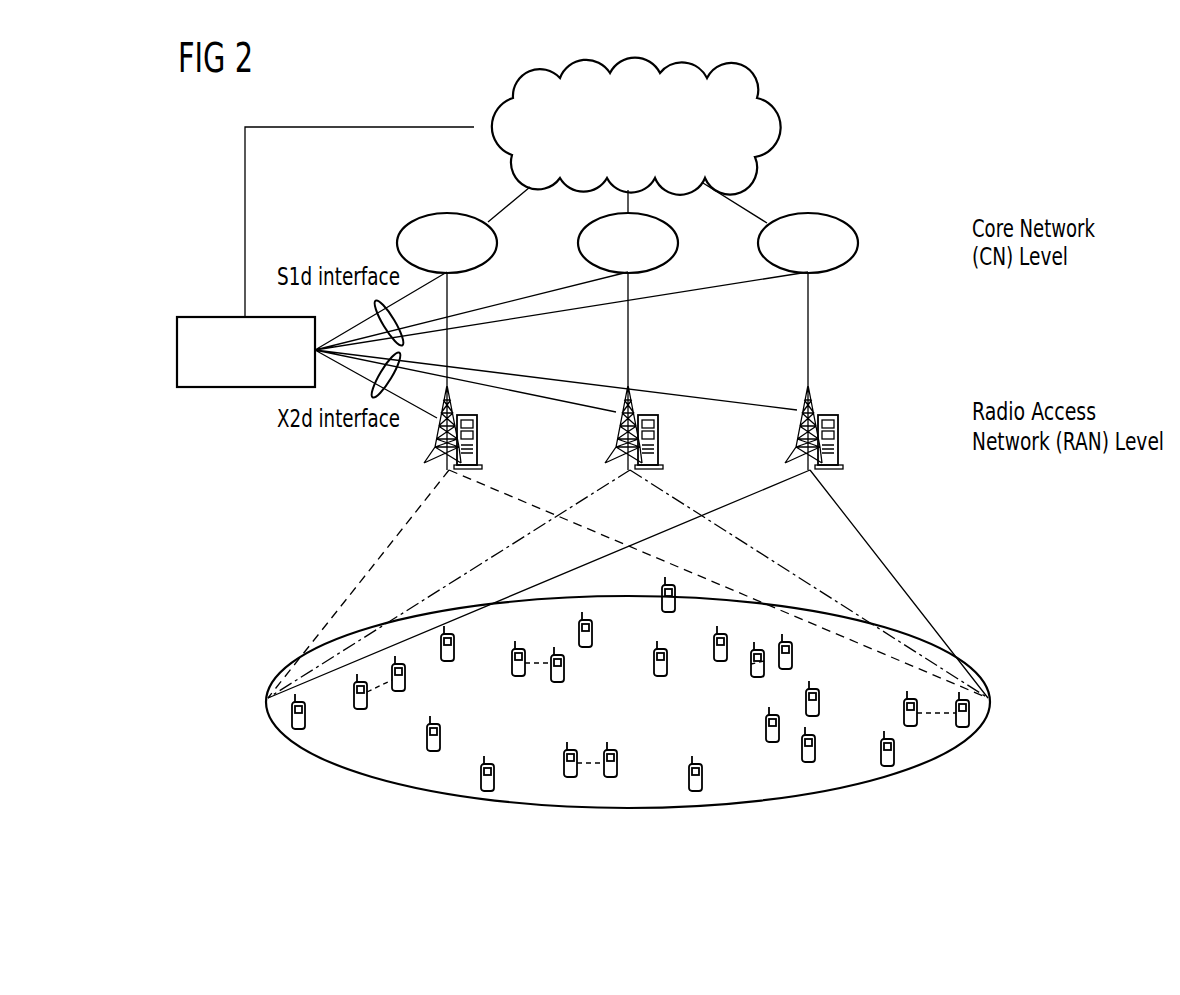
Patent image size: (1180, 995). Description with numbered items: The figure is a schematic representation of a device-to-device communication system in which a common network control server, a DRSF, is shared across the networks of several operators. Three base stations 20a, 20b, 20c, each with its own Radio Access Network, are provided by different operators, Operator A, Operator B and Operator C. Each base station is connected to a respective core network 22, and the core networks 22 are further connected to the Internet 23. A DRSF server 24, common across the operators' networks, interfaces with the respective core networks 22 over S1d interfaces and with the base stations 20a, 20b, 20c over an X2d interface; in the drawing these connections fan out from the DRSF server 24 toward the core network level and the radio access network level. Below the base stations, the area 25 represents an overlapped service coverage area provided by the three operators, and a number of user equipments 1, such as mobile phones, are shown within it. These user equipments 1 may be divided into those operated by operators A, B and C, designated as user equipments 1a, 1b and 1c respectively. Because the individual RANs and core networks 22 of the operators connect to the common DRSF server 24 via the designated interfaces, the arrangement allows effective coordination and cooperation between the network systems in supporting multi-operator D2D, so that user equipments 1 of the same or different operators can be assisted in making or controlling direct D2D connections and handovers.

The user equipment 1 is at (306, 717).
The user equipment operated by Operator A 1a is at (520, 678).
The user equipment operated by Operator B 1b is at (558, 684).
The user equipment operated by Operator C 1c is at (661, 678).
The base station of Operator A 20a is at (438, 458).
The base station of Operator B 20b is at (619, 460).
The base station of Operator C 20c is at (816, 404).
The core network 22 is at (497, 243).
The Internet 23 is at (782, 128).
The DRSF server 24 is at (218, 388).
The overlapped service coverage area 25 is at (318, 762).